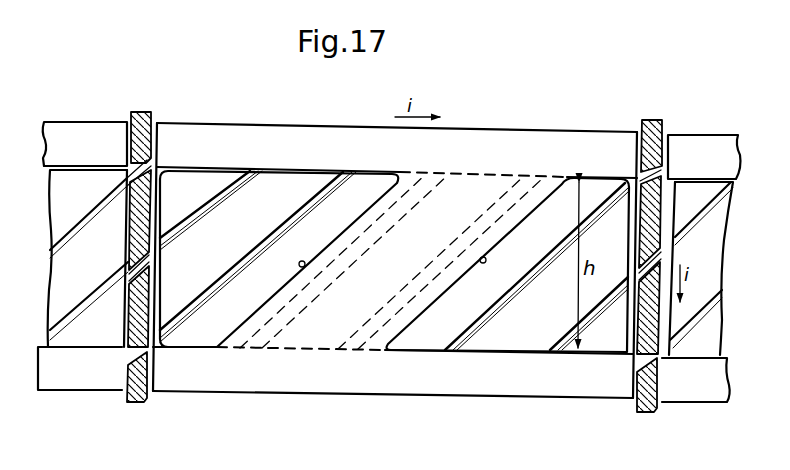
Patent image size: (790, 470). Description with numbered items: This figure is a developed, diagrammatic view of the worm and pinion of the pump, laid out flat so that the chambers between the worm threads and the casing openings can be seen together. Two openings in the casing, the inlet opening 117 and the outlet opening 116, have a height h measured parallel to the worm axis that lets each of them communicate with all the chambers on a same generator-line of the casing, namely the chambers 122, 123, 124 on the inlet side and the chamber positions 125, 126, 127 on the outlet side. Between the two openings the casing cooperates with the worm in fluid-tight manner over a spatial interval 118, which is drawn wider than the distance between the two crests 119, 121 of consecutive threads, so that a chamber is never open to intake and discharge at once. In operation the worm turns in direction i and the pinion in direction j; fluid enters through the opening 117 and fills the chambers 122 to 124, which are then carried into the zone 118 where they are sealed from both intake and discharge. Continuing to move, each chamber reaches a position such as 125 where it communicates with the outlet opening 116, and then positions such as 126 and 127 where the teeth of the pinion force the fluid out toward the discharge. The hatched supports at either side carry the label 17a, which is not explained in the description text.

The support post 17a is at (135, 392).
The chamber 122 is at (190, 183).
The chamber 123 is at (199, 271).
The chamber 124 is at (277, 249).
The opening 117 is at (305, 265).
The spatial interval 118 is at (307, 338).
The crest 119 is at (382, 222).
The crest 121 is at (426, 292).
The chamber position 125 is at (563, 207).
The chamber position 126 is at (513, 318).
The chamber position 127 is at (600, 340).
The opening 116 is at (482, 257).